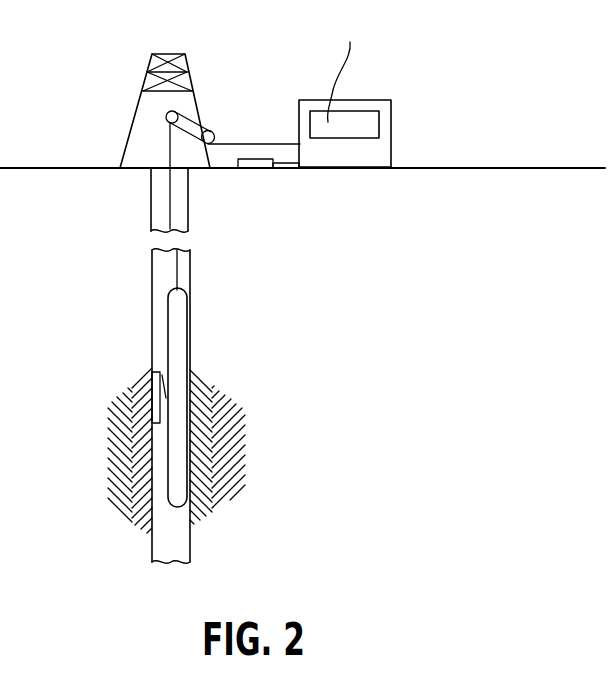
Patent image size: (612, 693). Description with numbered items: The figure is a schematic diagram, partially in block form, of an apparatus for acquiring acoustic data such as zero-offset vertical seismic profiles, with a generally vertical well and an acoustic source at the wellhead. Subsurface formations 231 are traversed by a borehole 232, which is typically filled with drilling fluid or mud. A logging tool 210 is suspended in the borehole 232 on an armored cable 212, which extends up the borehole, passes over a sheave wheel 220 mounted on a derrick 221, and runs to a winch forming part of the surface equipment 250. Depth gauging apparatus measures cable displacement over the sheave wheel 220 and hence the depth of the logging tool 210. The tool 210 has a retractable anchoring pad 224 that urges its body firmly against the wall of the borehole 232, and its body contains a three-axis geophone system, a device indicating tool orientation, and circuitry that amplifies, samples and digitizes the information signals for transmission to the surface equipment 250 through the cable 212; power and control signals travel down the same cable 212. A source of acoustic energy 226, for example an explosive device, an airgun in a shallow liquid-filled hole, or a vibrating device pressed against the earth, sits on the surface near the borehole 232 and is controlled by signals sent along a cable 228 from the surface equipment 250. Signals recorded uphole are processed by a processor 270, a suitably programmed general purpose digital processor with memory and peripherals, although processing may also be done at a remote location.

The logging tool 210 is at (196, 310).
The armored cable 212 is at (168, 192).
The sheave wheel 220 is at (178, 108).
The derrick 221 is at (133, 116).
The retractable anchoring pad 224 is at (155, 398).
The source of acoustic energy 226 is at (252, 160).
The cable 228 is at (288, 168).
The subsurface formations 231 is at (290, 302).
The borehole 232 is at (165, 272).
The surface equipment 250 is at (398, 126).
The processor 270 is at (358, 125).